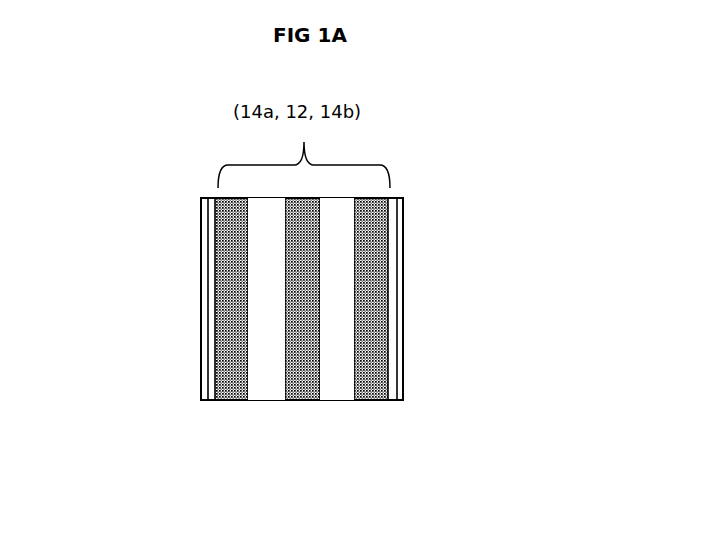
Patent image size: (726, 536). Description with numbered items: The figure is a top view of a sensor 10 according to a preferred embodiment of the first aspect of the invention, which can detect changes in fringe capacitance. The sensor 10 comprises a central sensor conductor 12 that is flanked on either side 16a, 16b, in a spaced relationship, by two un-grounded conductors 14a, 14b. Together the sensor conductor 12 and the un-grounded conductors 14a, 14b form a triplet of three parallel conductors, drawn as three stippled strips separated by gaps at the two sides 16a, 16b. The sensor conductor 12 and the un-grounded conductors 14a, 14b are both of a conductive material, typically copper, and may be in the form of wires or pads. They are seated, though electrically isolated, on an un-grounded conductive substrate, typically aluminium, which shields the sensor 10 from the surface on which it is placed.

The sensor 10 is at (622, 252).
The sensor conductor 12 is at (304, 276).
The un-grounded conductor 14a is at (226, 341).
The un-grounded conductor 14b is at (377, 375).
The side 16a is at (275, 388).
The side 16b is at (328, 388).